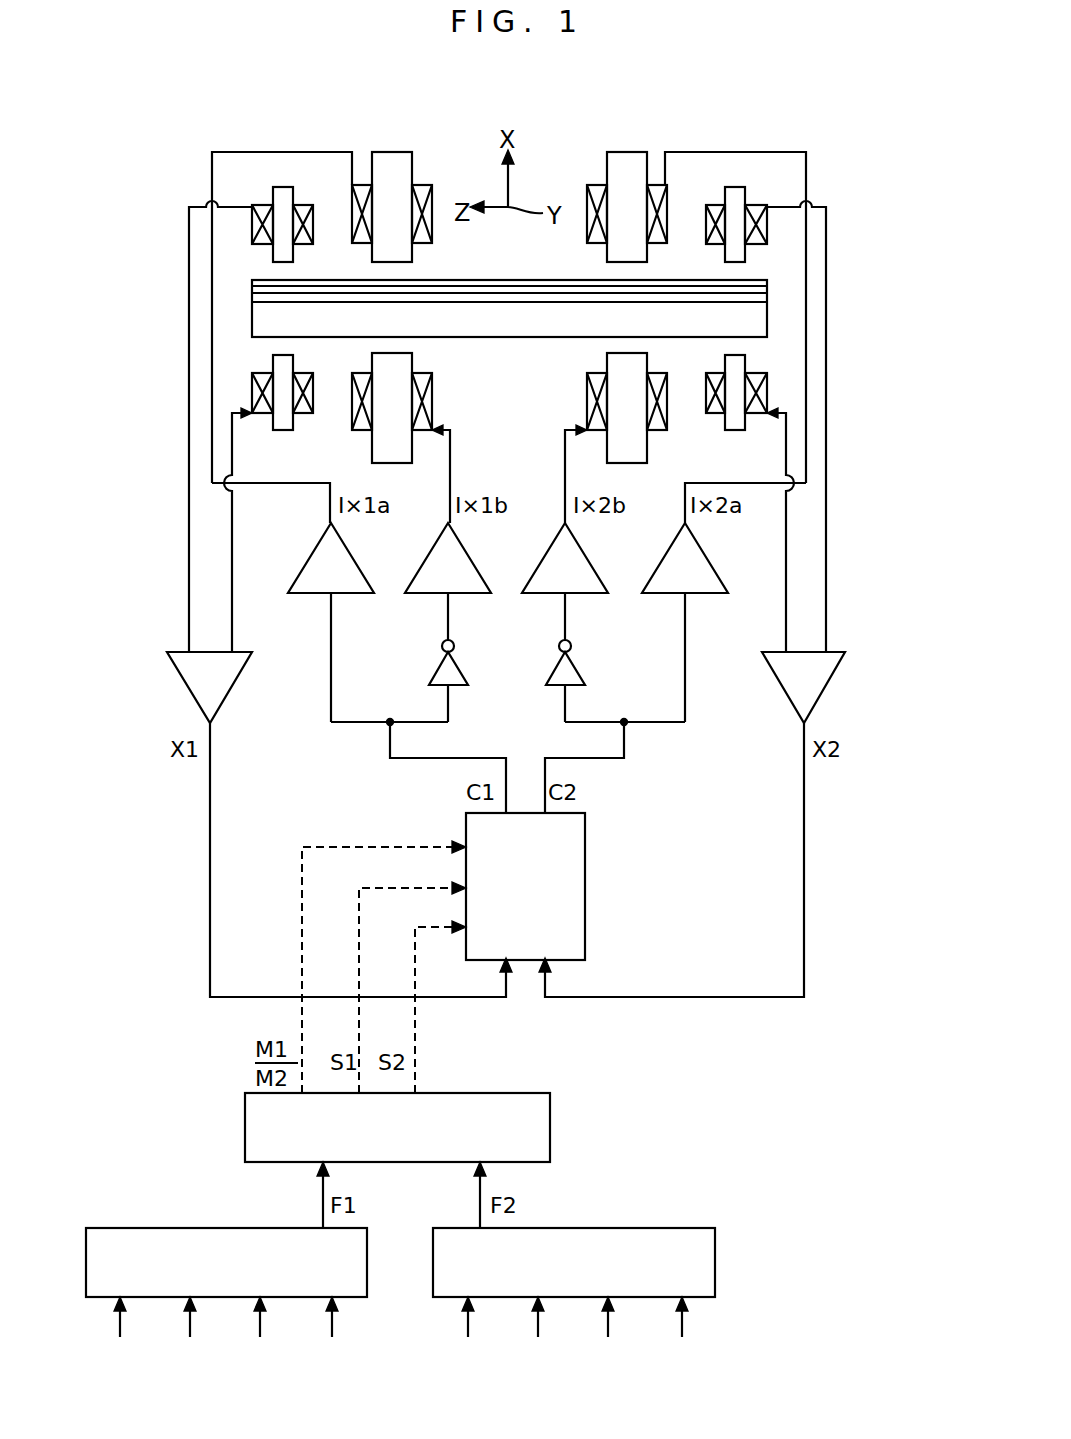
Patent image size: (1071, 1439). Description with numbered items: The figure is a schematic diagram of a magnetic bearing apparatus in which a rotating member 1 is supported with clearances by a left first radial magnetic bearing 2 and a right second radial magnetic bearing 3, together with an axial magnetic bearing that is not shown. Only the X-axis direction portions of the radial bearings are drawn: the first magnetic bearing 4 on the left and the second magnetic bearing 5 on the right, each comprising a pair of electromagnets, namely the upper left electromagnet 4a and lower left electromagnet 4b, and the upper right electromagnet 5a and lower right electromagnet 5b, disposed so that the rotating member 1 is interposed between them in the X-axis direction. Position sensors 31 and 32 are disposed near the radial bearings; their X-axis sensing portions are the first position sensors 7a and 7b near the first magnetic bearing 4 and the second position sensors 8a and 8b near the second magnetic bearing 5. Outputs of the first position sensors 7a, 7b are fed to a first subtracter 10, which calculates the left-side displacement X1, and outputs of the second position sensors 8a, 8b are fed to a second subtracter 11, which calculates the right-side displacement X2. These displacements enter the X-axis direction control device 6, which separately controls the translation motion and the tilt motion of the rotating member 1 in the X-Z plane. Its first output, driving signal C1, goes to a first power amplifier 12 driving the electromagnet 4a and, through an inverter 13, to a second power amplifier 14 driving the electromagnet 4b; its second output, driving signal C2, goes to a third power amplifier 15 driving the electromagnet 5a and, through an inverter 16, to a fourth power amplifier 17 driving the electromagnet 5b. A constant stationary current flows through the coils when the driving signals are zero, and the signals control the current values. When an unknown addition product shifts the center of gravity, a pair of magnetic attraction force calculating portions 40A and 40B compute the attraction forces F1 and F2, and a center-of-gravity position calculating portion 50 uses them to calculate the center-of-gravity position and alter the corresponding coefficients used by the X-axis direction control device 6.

The rotating member 1 is at (506, 337).
The first radial magnetic bearing 2 is at (391, 182).
The second radial magnetic bearing 3 is at (630, 184).
The first magnetic bearing 4 is at (390, 152).
The upper left electromagnet 4a is at (412, 253).
The lower left electromagnet 4b is at (412, 360).
The second magnetic bearing 5 is at (628, 152).
The upper right electromagnet 5a is at (607, 254).
The lower right electromagnet 5b is at (607, 360).
The X-axis direction control device 6 is at (585, 890).
The first position sensor 7a is at (273, 255).
The first position sensor 7b is at (273, 358).
The second position sensor 8a is at (745, 255).
The second position sensor 8b is at (745, 360).
The first subtracter 10 is at (230, 690).
The second subtracter 11 is at (783, 695).
The first power amplifier 12 is at (353, 557).
The inverter 13 is at (468, 668).
The second power amplifier 14 is at (470, 557).
The third power amplifier 15 is at (712, 560).
The inverter 16 is at (585, 672).
The fourth power amplifier 17 is at (590, 560).
The position sensor 31 is at (256, 180).
The position sensor 32 is at (765, 185).
The magnetic attraction force calculating portion 40A is at (215, 1228).
The magnetic attraction force calculating portion 40B is at (612, 1228).
The center-of-gravity position calculating portion 50 is at (480, 1093).